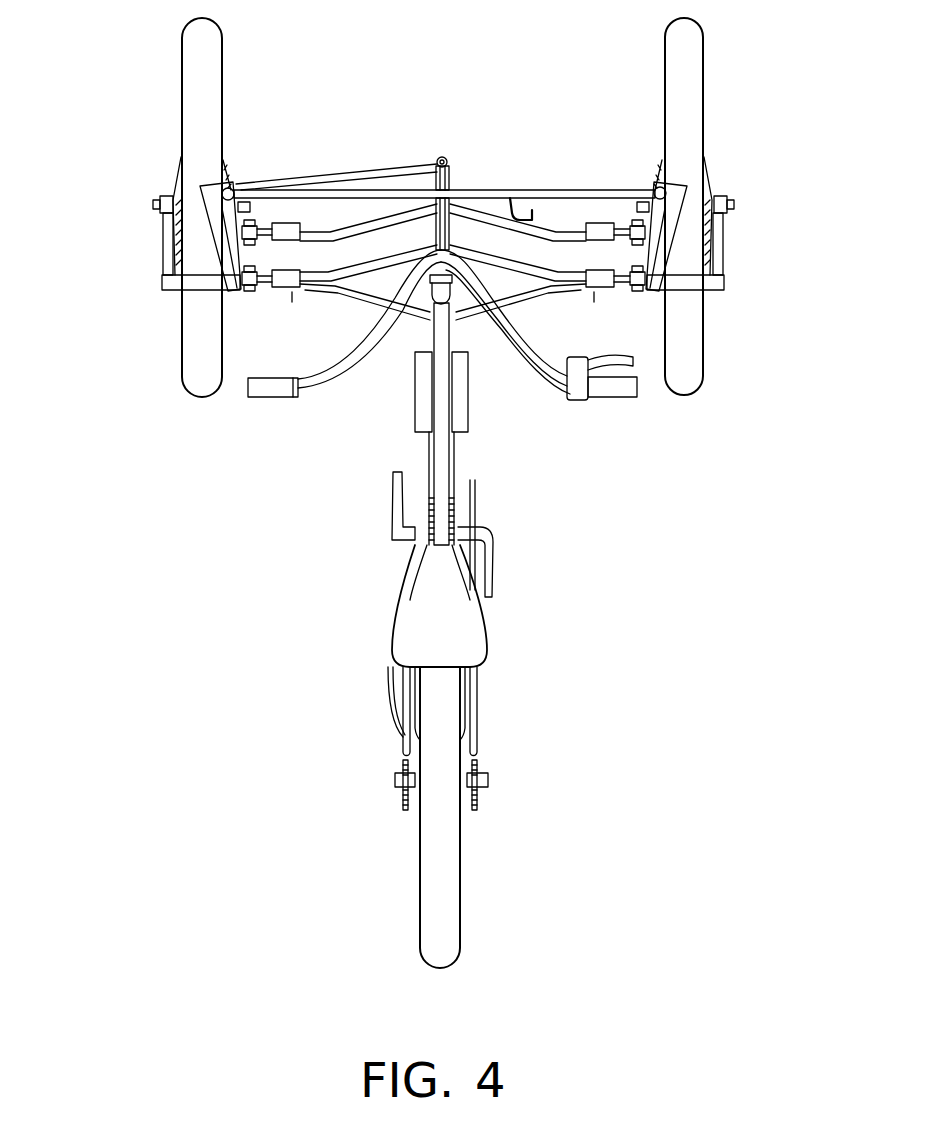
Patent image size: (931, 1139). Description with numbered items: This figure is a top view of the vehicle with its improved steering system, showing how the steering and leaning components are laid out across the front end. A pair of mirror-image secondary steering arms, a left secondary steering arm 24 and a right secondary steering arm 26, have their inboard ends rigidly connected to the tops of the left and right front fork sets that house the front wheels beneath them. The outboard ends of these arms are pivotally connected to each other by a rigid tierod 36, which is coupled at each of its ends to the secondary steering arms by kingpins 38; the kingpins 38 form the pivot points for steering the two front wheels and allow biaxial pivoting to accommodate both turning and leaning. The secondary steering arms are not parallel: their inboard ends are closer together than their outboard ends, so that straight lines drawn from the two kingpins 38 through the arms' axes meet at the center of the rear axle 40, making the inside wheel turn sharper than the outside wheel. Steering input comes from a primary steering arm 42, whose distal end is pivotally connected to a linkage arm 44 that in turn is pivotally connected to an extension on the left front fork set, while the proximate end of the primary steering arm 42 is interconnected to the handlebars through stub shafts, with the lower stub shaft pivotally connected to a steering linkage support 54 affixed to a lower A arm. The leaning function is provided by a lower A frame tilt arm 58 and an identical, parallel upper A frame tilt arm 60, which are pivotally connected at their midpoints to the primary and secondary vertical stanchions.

The left secondary steering arm 24 is at (200, 180).
The right secondary steering arm 26 is at (678, 190).
The tierod 36 is at (593, 190).
The kingpin 38 is at (230, 185).
The rear axle 40 is at (480, 787).
The primary steering arm 42 is at (450, 175).
The linkage arm 44 is at (375, 176).
The steering linkage support 54 is at (538, 197).
The lower A frame tilt arm 58 is at (317, 242).
The upper A frame tilt arm 60 is at (398, 320).